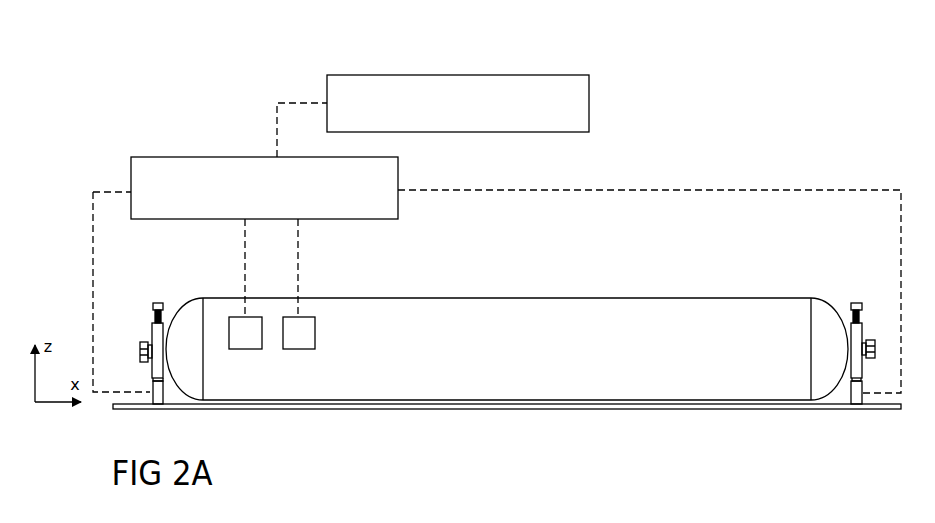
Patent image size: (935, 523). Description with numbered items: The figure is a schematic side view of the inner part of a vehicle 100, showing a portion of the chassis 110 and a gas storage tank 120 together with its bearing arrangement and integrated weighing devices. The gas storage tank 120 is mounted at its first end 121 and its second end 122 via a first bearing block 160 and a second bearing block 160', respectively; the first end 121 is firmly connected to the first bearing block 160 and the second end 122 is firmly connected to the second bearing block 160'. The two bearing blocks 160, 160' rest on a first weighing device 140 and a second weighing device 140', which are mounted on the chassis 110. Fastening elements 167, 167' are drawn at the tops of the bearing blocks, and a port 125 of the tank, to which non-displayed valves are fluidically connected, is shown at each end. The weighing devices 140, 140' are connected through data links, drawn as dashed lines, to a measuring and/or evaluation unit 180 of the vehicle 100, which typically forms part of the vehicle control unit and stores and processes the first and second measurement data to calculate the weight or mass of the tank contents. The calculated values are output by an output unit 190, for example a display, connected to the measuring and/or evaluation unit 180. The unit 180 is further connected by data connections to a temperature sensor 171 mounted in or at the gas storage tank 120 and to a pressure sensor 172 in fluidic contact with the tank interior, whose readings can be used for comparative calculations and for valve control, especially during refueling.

The vehicle 100 is at (497, 216).
The chassis 110 is at (727, 408).
The gas storage tank 120 is at (710, 313).
The first end 121 is at (816, 288).
The second end 122 is at (180, 285).
The port 125 is at (131, 348).
The first weighing device 140 is at (817, 415).
The second weighing device 140' is at (115, 415).
The first bearing block 160 is at (811, 352).
The second bearing block 160' is at (187, 380).
The adjustment screw 167 is at (845, 281).
The adjustment screw 167' is at (140, 278).
The temperature sensor 171 is at (243, 342).
The pressure sensor 172 is at (297, 342).
The measuring and/or evaluation unit 180 is at (264, 161).
The output unit 190 is at (458, 103).